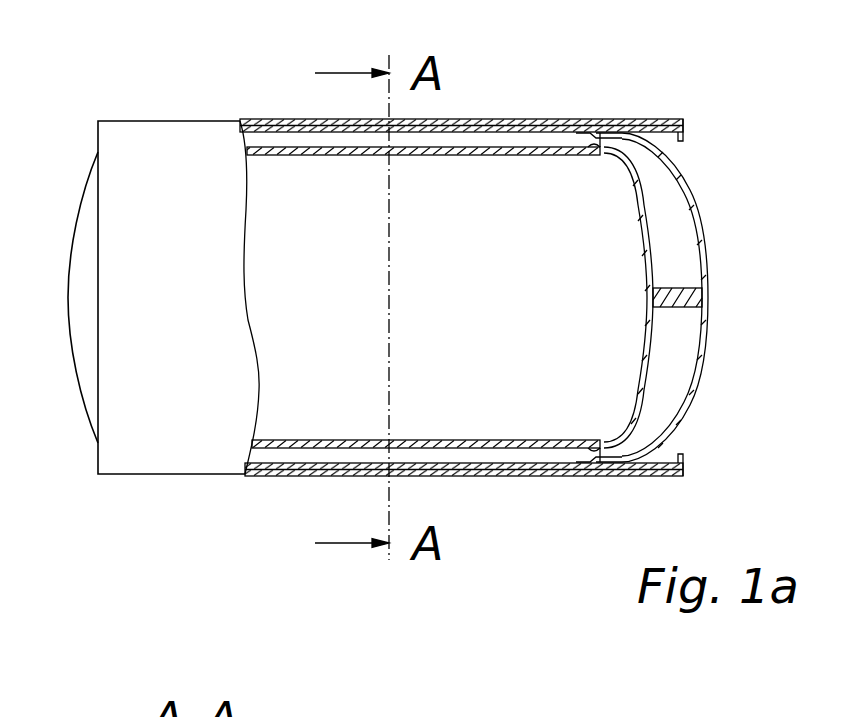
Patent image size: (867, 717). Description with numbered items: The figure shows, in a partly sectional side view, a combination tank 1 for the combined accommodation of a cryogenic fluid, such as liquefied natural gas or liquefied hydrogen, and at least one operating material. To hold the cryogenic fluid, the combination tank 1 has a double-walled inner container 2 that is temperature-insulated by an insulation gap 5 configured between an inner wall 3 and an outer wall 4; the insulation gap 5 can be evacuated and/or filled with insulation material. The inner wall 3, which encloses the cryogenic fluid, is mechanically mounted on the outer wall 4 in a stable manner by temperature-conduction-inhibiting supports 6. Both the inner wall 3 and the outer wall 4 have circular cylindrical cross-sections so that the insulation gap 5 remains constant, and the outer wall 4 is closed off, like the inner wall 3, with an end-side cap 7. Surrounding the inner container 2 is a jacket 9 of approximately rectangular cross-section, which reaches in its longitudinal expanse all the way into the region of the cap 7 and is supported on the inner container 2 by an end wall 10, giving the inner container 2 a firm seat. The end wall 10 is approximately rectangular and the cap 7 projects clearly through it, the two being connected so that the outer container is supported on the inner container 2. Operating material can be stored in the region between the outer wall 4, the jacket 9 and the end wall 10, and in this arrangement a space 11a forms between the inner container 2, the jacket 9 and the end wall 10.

The combination tank 1 is at (122, 66).
The inner container 2 is at (736, 216).
The inner wall 3 is at (340, 153).
The outer wall 4 is at (425, 129).
The insulation gap 5 is at (466, 138).
The temperature-conduction-inhibiting supports 6 is at (683, 296).
The end-side cap 7 is at (706, 346).
The jacket 9 is at (522, 121).
The end wall 10 is at (681, 134).
The space 11a is at (668, 124).